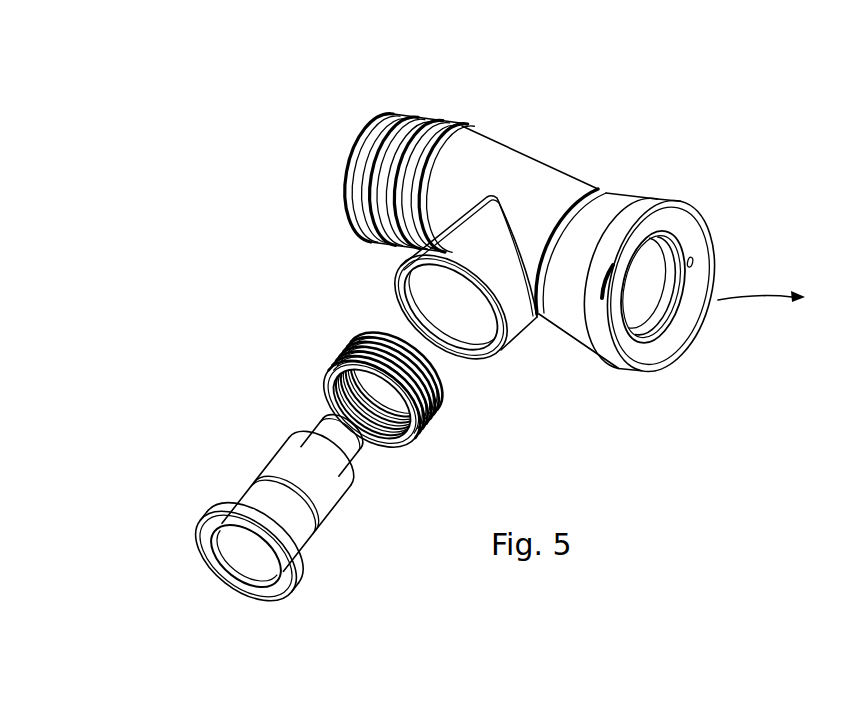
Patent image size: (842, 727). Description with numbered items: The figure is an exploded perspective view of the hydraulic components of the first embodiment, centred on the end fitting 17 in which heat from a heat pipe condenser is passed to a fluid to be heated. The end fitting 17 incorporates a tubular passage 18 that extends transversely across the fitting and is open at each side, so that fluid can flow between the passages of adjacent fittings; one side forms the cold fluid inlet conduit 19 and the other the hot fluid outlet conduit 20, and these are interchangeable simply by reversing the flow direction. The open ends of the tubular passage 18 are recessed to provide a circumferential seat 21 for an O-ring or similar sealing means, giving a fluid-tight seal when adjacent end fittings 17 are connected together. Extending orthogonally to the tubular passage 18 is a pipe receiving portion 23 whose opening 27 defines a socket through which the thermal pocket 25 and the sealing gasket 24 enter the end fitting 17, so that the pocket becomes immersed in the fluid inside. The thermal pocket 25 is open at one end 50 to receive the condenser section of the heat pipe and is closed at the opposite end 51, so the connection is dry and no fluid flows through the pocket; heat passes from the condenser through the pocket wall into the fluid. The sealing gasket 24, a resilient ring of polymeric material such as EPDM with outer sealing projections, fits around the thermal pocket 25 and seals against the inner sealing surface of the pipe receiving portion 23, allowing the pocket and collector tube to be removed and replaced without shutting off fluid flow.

The end fitting 17 is at (532, 177).
The tubular passage 18 is at (653, 263).
The cold fluid inlet conduit 19 is at (331, 146).
The hot fluid outlet conduit 20 is at (778, 282).
The circumferential seat 21 is at (387, 137).
The pipe receiving portion 23 is at (517, 318).
The sealing gasket 24 is at (443, 408).
The thermal pocket 25 is at (313, 503).
The opening 27 is at (437, 292).
The open end 50 is at (252, 555).
The closed end 51 is at (333, 424).